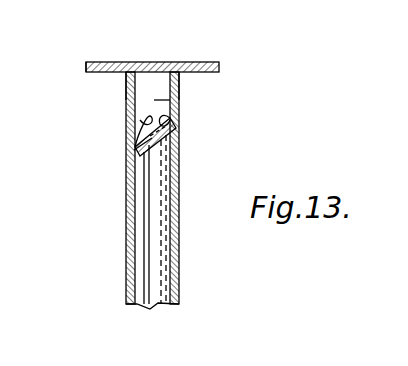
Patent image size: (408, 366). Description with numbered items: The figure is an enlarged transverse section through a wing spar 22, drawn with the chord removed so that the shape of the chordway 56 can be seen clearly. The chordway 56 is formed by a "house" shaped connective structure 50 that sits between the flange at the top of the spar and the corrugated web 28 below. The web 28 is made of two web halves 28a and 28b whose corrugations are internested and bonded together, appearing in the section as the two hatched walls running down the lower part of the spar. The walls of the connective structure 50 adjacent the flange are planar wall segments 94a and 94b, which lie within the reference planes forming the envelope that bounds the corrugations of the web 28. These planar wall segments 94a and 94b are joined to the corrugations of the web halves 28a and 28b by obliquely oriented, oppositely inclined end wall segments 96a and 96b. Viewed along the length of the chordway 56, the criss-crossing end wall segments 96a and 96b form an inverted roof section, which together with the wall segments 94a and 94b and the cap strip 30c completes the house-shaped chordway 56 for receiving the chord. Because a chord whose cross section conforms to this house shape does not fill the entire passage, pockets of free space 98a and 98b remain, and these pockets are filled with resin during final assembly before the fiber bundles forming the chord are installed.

The wing spar 22 is at (213, 53).
The cap strip 30c is at (90, 66).
The web 28 is at (141, 190).
The web half 28a is at (128, 200).
The web half 28b is at (142, 245).
The planar wall segment 94a is at (125, 87).
The planar wall segment 94b is at (182, 83).
The chordway 56 is at (177, 98).
The connective structure 50 is at (123, 112).
The end wall segment 96a is at (132, 130).
The end wall segment 96b is at (181, 120).
The free space pocket 98a is at (130, 143).
The free space pocket 98b is at (182, 143).